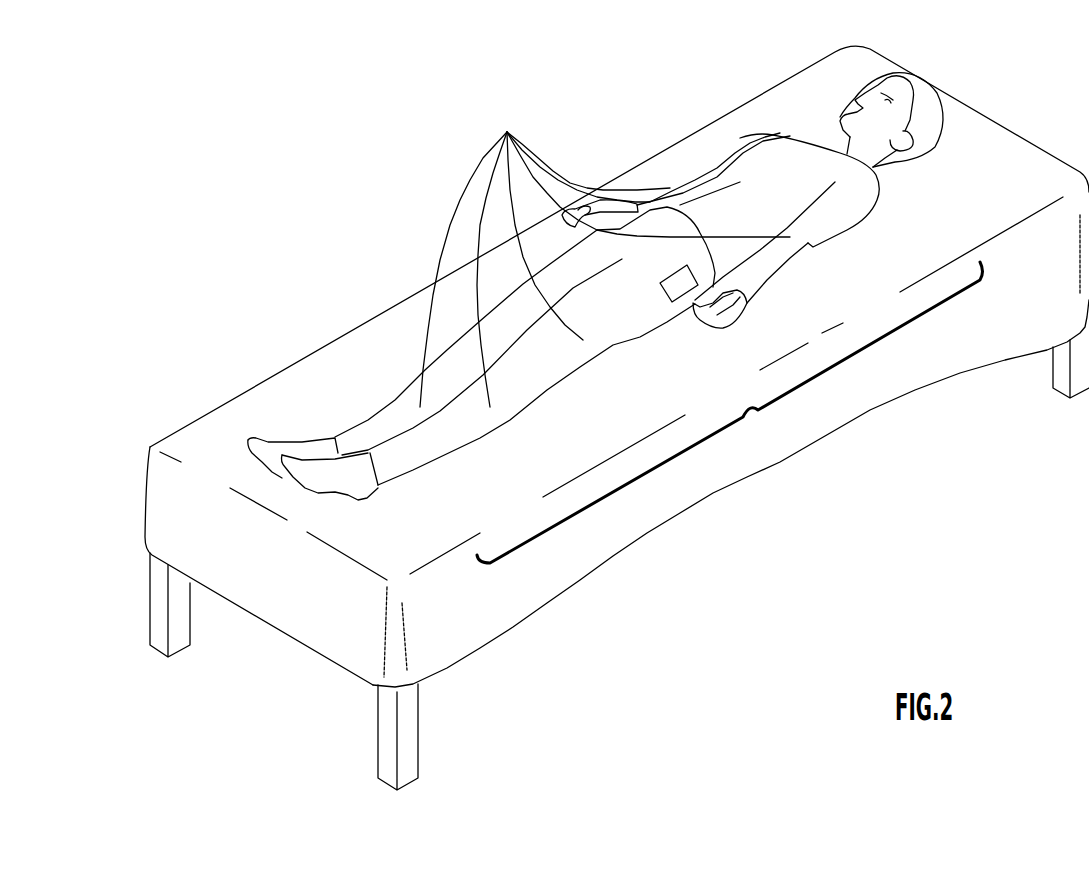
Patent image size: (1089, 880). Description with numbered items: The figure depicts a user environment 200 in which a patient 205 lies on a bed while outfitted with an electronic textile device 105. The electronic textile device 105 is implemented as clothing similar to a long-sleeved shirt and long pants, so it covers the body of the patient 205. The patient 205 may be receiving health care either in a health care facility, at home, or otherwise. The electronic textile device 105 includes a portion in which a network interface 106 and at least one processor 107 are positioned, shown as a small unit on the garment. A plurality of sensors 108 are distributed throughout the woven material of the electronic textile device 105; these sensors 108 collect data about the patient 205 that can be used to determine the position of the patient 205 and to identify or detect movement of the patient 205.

The user environment 200 is at (617, 418).
The electronic textile device 105 is at (730, 412).
The network interface 106 is at (652, 335).
The processor 107 is at (667, 302).
The sensors 108 is at (605, 253).
The patient 205 is at (840, 117).